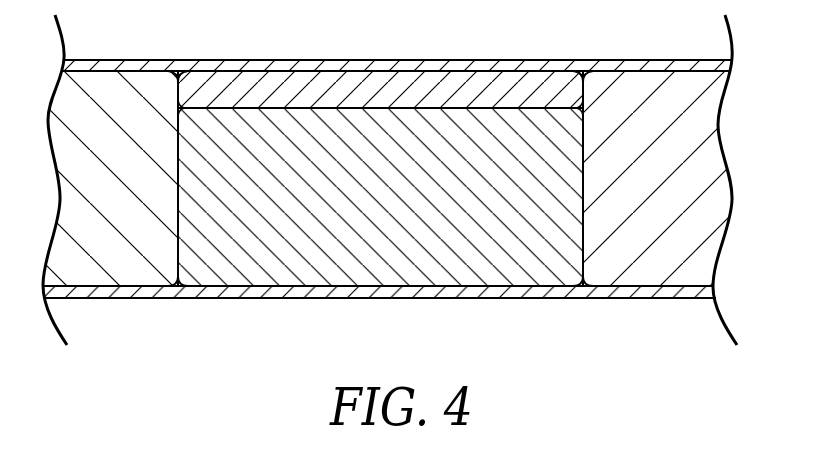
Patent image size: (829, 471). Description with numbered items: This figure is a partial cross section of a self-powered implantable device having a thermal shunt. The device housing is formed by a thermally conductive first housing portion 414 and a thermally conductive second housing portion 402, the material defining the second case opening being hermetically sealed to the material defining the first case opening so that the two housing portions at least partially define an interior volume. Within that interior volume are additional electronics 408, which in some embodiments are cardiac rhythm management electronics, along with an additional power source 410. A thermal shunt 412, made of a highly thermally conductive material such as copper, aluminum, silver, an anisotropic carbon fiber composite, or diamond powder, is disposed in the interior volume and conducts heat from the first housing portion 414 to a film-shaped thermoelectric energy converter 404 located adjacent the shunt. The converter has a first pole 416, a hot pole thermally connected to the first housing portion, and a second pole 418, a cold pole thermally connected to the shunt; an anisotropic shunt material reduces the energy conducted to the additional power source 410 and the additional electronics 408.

The second housing portion 402 is at (397, 44).
The thermoelectric energy converter 404 is at (380, 64).
The additional electronics 408 is at (647, 282).
The additional power source 410 is at (99, 283).
The thermal shunt 412 is at (395, 283).
The first housing portion 414 is at (178, 300).
The first pole 416 is at (500, 88).
The second pole 418 is at (349, 78).